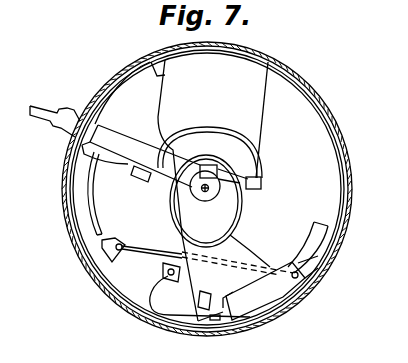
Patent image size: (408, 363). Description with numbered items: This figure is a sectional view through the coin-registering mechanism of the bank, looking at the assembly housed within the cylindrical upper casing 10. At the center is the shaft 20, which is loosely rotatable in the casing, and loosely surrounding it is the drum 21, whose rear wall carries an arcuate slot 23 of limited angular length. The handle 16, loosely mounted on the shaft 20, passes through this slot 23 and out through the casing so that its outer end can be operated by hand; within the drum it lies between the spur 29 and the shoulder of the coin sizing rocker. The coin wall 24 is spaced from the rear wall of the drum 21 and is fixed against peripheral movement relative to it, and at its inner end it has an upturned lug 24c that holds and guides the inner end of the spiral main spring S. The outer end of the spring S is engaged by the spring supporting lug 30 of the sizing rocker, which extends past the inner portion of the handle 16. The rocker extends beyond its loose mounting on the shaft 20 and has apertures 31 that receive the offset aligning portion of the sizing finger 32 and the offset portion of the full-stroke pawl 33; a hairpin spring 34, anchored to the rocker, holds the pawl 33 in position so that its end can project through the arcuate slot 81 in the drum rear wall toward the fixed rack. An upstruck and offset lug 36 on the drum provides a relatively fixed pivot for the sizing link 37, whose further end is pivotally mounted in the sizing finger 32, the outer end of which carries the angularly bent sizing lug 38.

The upper casing 10 is at (62, 189).
The handle 16 is at (43, 107).
The shaft 20 is at (205, 192).
The drum 21 is at (314, 110).
The arcuate slot 23 is at (92, 208).
The coin wall 24 is at (179, 190).
The upturned lug 24c is at (261, 186).
The spur 29 is at (82, 148).
The spring supporting lug 30 is at (139, 181).
The apertures 31 is at (227, 296).
The sizing finger 32 is at (282, 264).
The full-stroke pawl 33 is at (168, 273).
The hairpin spring 34 is at (150, 288).
The upstruck and offset lug 36 is at (115, 242).
The sizing link 37 is at (145, 253).
The sizing lug 38 is at (318, 262).
The arcuate slot 81 is at (326, 232).
The main spring S is at (217, 133).